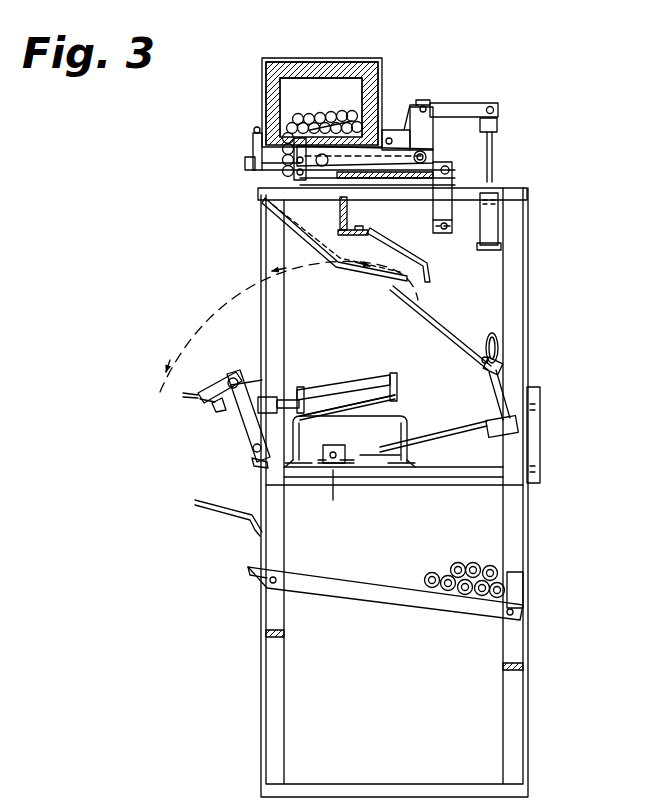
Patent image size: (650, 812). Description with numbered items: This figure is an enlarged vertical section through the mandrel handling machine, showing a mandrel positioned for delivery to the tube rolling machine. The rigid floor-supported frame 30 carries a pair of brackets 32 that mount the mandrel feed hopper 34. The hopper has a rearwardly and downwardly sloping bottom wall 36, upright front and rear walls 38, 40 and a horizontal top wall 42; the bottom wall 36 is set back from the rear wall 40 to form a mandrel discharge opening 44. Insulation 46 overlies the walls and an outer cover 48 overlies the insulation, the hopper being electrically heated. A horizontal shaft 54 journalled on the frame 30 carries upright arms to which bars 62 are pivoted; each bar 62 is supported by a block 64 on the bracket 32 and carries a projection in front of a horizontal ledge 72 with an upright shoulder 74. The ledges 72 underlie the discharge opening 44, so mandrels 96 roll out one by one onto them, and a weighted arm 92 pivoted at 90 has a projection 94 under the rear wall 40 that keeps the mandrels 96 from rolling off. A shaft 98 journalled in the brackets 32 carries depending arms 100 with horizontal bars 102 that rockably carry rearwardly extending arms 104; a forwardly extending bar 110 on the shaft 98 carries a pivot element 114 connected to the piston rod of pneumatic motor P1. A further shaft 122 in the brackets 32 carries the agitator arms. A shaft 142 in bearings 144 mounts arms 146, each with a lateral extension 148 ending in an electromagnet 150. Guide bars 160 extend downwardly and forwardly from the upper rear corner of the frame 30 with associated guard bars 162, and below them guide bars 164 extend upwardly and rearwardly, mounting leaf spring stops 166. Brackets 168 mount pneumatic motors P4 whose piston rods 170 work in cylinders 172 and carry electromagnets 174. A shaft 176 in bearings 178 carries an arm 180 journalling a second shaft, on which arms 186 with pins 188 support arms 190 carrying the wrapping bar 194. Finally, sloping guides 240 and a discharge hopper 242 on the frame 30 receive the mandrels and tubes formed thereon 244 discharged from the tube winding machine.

The frame 30 is at (512, 241).
The brackets 32 is at (406, 125).
The mandrel feed hopper 34 is at (258, 62).
The bottom wall 36 is at (365, 157).
The front wall 38 is at (378, 72).
The rear wall 40 is at (268, 88).
The top wall 42 is at (286, 62).
The mandrel discharge opening 44 is at (291, 124).
The insulation 46 is at (350, 62).
The outer cover 48 is at (319, 60).
The shaft 54 is at (450, 170).
The bar 62 is at (439, 215).
The block 64 is at (292, 176).
The ledge 72 is at (280, 164).
The shoulder 74 is at (292, 140).
The pivot 90 is at (254, 128).
The weighted arm 92 is at (252, 150).
The projection 94 is at (245, 163).
The mandrels 96 is at (336, 115).
The shaft 98 is at (430, 105).
The depending arm 100 is at (433, 135).
The bar 102 is at (427, 155).
The arm 104 is at (370, 168).
The bar 110 is at (470, 106).
The pivot element 114 is at (498, 110).
The shaft 122 is at (389, 128).
The shaft 142 is at (339, 496).
The bearings 144 is at (342, 450).
The arms 146 is at (430, 432).
The lateral extension 148 is at (492, 388).
The electromagnet 150 is at (494, 362).
The guide bars 160 is at (305, 248).
The guard bars 162 is at (435, 258).
The guide bars 164 is at (430, 322).
The leaf spring stops 166 is at (500, 338).
The brackets 168 is at (415, 455).
The piston rod 170 is at (290, 398).
The cylinder 172 is at (364, 384).
The electromagnet 174 is at (264, 395).
The shaft 176 is at (254, 460).
The bearings 178 is at (253, 453).
The arm 180 is at (248, 428).
The arms 186 is at (215, 408).
The pin 188 is at (210, 403).
The arm 190 is at (216, 385).
The wrapping bar 194 is at (183, 395).
The guides 240 is at (224, 514).
The discharge hopper 242 is at (371, 576).
The mandrels and tubes formed thereon 244 is at (488, 565).
The pneumatic motor P1 is at (488, 212).
The pneumatic motor P4 is at (330, 388).